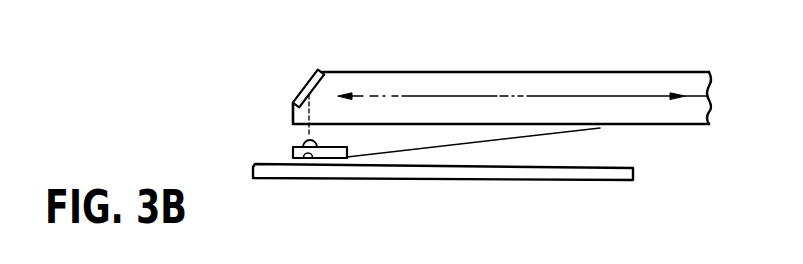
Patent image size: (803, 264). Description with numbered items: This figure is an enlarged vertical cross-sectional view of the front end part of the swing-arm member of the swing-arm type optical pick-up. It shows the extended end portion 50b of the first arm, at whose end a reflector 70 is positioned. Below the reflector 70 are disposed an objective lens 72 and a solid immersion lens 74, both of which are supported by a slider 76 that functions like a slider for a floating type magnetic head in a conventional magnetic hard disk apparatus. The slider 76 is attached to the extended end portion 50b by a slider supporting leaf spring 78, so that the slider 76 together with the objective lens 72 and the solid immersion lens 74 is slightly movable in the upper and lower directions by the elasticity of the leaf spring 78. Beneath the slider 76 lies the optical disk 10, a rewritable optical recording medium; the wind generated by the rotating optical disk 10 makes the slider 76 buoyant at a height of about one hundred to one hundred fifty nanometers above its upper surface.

The extended end portion 50b is at (493, 72).
The reflector 70 is at (307, 80).
The objective lens 72 is at (303, 139).
The solid immersion lens 74 is at (308, 158).
The slider 76 is at (293, 148).
The slider supporting leaf spring 78 is at (598, 130).
The optical disk 10 is at (636, 174).